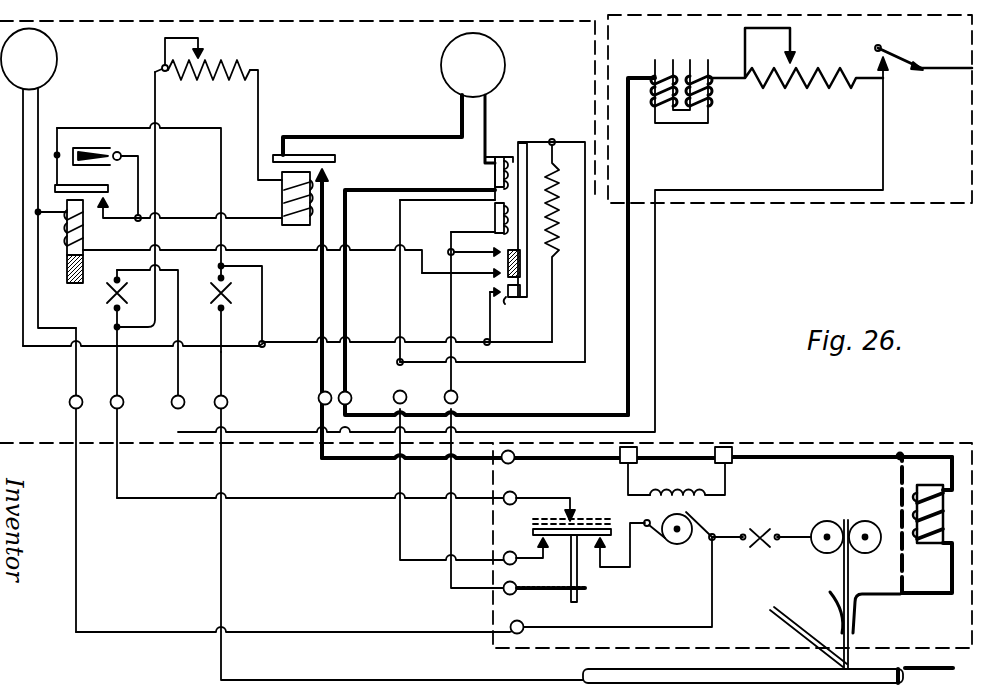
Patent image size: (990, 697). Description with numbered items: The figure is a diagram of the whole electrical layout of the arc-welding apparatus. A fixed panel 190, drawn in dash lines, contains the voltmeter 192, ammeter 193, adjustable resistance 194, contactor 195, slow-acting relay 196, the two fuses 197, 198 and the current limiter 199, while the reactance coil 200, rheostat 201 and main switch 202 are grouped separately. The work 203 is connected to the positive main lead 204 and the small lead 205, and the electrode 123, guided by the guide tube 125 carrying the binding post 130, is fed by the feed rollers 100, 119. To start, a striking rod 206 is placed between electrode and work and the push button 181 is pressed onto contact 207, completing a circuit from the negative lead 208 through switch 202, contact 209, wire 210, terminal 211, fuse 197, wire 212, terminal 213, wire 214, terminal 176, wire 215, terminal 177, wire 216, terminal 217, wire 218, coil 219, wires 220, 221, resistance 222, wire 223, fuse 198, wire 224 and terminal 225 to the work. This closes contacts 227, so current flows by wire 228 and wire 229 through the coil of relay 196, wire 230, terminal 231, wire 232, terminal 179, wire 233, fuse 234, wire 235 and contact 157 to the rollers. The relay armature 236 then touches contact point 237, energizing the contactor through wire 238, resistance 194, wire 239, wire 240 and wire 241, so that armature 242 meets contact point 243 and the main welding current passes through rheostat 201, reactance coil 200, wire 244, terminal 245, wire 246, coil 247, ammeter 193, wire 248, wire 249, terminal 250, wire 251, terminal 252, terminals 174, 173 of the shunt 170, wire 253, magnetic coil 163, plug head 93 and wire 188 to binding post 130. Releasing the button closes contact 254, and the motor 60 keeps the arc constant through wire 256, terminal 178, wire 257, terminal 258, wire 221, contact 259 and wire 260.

The motor 60 is at (689, 527).
The plug head 93 is at (903, 595).
The feed roller 100 is at (827, 527).
The feed roller 119 is at (869, 525).
The electrode 123 is at (843, 576).
The guide tube 125 is at (857, 623).
The binding post 130 is at (875, 592).
The contact 157 is at (814, 549).
The magnetic coil 163 is at (939, 525).
The shunt 170 is at (690, 447).
The terminal 173 is at (732, 464).
The terminal 174 is at (619, 465).
The terminal 176 is at (516, 490).
The terminal 177 is at (522, 594).
The terminal 178 is at (522, 549).
The terminal 179 is at (522, 633).
The push button 181 is at (578, 604).
The wire 188 is at (882, 597).
The fixed panel 190 is at (303, 22).
The voltmeter 192 is at (29, 188).
The ammeter 193 is at (473, 98).
The adjustable resistance 194 is at (202, 70).
The contactor 195 is at (281, 198).
The slow-acting relay 196 is at (77, 241).
The 5 amp fuse 197 is at (132, 300).
The 15 amp fuse 198 is at (236, 308).
The current limiter 199 is at (551, 250).
The reactance coil 200 is at (681, 103).
The rheostat 201 is at (796, 71).
The main switch 202 is at (905, 57).
The work 203 is at (741, 676).
The positive main lead 204 is at (956, 662).
The small lead 205 is at (228, 526).
The striking rod 206 is at (778, 628).
The contact 207 is at (577, 514).
The negative lead 208 is at (946, 80).
The contact 209 is at (878, 58).
The wire 210 is at (180, 430).
The terminal 211 is at (170, 395).
The wire 212 is at (119, 368).
The terminal 213 is at (110, 394).
The wire 214 is at (167, 500).
The wire 215 is at (555, 490).
The wire 216 is at (450, 483).
The terminal 217 is at (458, 404).
The wire 218 is at (453, 384).
The coil 219 is at (492, 216).
The wire 220 is at (398, 324).
The wire 221 is at (533, 369).
The resistance 222 is at (556, 294).
The wire 223 is at (268, 294).
The wire 224 is at (223, 368).
The terminal 225 is at (228, 404).
The contacts 227 is at (471, 263).
The wire 228 is at (474, 244).
The wire 229 is at (267, 265).
The wire 230 is at (41, 306).
The terminal 231 is at (69, 404).
The wire 232 is at (80, 604).
The wire 233 is at (662, 628).
The 25 amp fuse 234 is at (761, 530).
The wire 235 is at (793, 536).
The armature 236 is at (98, 174).
The contact point 237 is at (118, 205).
The wire 238 is at (128, 327).
The wire 239 is at (262, 108).
The wire 240 is at (210, 208).
The wire 241 is at (97, 128).
The armature 242 is at (304, 150).
The contact point 243 is at (332, 174).
The wire 244 is at (630, 176).
The terminal 245 is at (352, 404).
The wire 246 is at (413, 190).
The coil 247 is at (493, 178).
The wire 248 is at (413, 136).
The wire 249 is at (319, 280).
The terminal 250 is at (311, 393).
The wire 251 is at (357, 463).
The terminal 252 is at (533, 465).
The wire 253 is at (805, 458).
The contact 254 is at (530, 537).
The wire 256 is at (630, 566).
The wire 257 is at (400, 538).
The terminal 258 is at (416, 393).
The contact 259 is at (514, 303).
The wire 260 is at (486, 333).